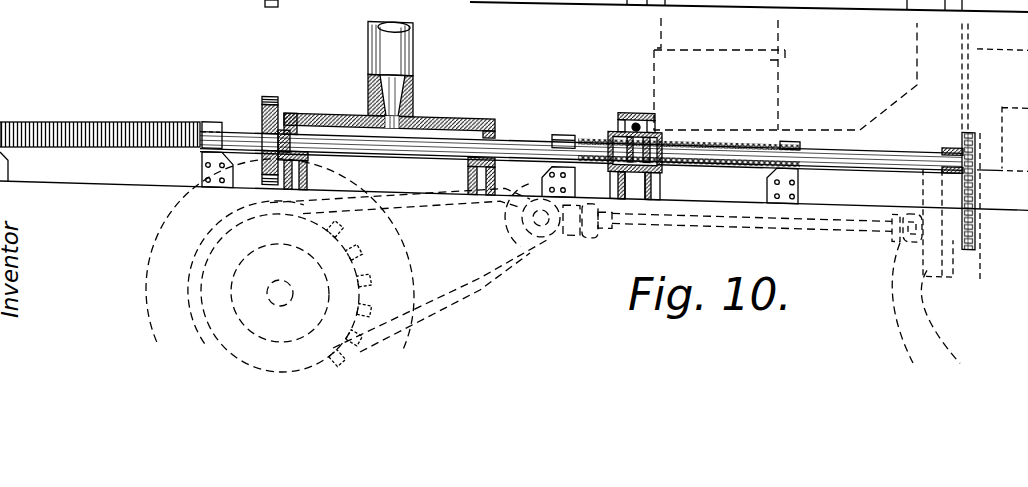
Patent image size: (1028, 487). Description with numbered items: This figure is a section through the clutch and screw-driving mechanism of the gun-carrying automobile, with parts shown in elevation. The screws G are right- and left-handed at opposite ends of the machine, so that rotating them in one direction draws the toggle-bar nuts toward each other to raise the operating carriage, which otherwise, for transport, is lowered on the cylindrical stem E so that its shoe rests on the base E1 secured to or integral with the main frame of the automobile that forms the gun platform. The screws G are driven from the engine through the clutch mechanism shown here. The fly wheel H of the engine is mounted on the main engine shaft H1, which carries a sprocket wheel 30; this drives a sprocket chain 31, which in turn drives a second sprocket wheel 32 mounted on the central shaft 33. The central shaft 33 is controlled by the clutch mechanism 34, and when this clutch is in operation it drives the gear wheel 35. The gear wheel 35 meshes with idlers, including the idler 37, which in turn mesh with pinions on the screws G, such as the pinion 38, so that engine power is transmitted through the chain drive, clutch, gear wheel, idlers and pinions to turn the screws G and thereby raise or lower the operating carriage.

The sprocket wheel 30 is at (965, 220).
The sprocket chain 31 is at (958, 165).
The sprocket wheel 32 is at (962, 106).
The central shaft 33 is at (527, 125).
The clutch mechanism 34 is at (627, 99).
The gear wheel 35 is at (262, 109).
The idler 37 is at (268, 87).
The pinion 38 is at (267, 4).
The screw G is at (128, 122).
The cylindrical stem E is at (417, 50).
The base E1 is at (445, 100).
The fly wheel H is at (920, 222).
The main engine shaft H1 is at (977, 212).